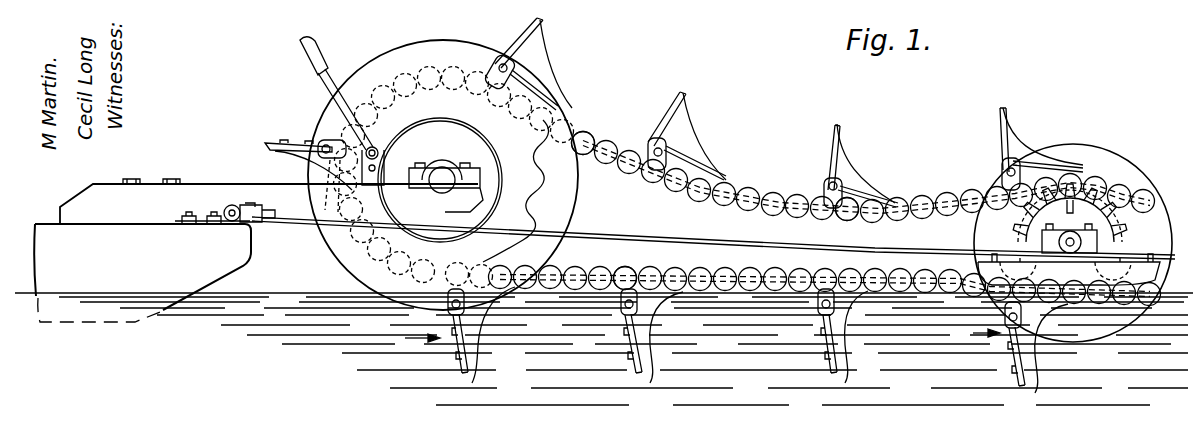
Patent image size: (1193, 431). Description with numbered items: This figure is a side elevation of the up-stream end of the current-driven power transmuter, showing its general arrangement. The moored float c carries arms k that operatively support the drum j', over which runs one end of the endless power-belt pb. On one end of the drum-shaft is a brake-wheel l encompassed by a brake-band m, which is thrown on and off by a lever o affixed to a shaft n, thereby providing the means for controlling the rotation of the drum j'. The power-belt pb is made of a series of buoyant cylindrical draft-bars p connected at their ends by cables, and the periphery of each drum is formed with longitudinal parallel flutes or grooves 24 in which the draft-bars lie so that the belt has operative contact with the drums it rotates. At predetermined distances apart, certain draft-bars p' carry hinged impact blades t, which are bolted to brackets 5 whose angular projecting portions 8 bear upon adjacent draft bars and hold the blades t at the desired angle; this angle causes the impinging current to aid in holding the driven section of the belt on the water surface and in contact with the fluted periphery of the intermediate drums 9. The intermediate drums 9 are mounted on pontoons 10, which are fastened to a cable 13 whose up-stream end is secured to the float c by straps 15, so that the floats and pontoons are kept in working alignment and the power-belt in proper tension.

The drum j' is at (443, 161).
The brake-band m is at (495, 150).
The brake-wheel l is at (446, 177).
The shaft n is at (372, 146).
The lever o is at (322, 86).
The impact blades t is at (286, 146).
The angular projecting portions 8 is at (540, 20).
The brackets 5 is at (704, 165).
The draft-bars p is at (747, 186).
The draft-bars p' is at (736, 244).
The power-belt pb is at (589, 150).
The flutes or grooves 24 is at (520, 191).
The arms k is at (196, 183).
The straps 15 is at (235, 204).
The float c is at (250, 250).
The cable 13 is at (690, 237).
The intermediate drums 9 is at (1125, 163).
The pontoons 10 is at (985, 260).